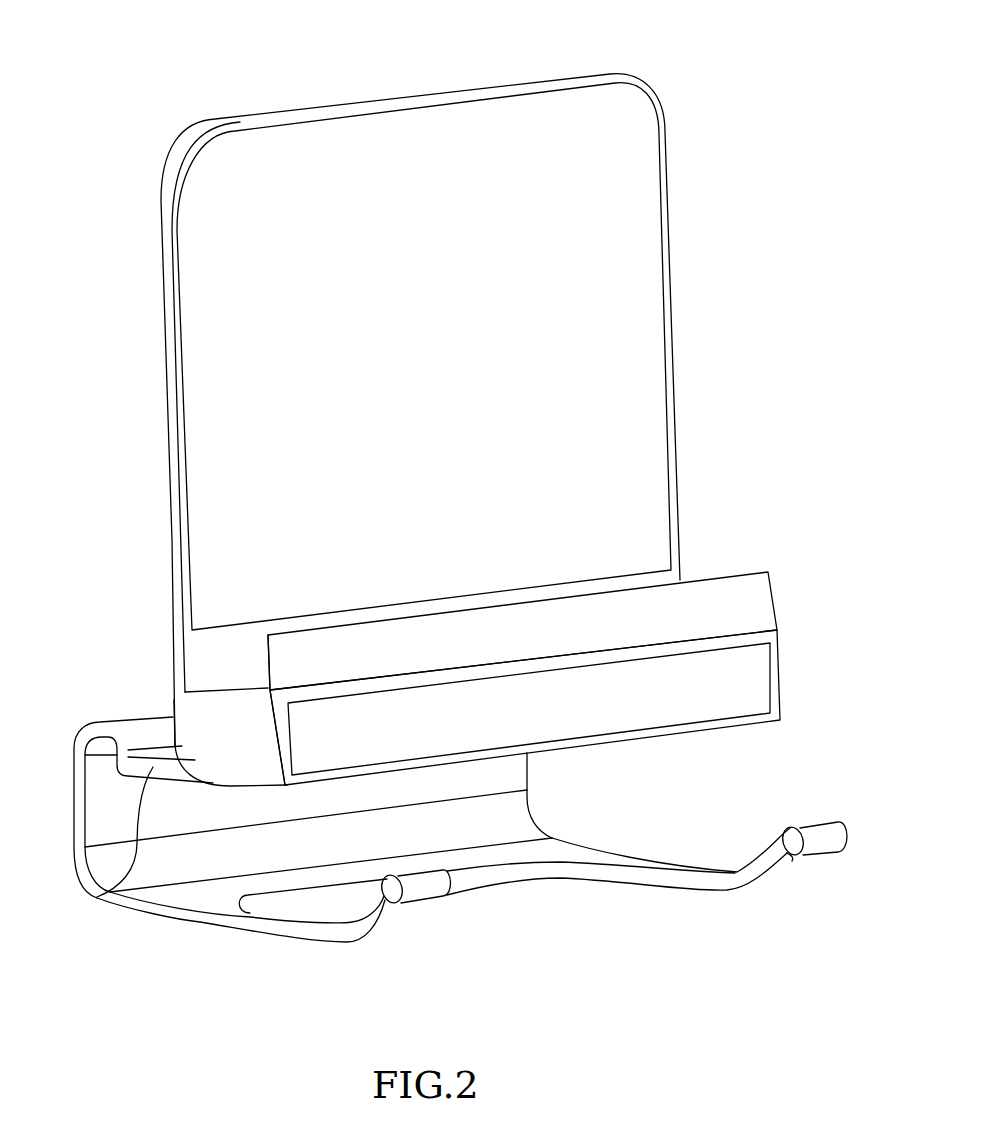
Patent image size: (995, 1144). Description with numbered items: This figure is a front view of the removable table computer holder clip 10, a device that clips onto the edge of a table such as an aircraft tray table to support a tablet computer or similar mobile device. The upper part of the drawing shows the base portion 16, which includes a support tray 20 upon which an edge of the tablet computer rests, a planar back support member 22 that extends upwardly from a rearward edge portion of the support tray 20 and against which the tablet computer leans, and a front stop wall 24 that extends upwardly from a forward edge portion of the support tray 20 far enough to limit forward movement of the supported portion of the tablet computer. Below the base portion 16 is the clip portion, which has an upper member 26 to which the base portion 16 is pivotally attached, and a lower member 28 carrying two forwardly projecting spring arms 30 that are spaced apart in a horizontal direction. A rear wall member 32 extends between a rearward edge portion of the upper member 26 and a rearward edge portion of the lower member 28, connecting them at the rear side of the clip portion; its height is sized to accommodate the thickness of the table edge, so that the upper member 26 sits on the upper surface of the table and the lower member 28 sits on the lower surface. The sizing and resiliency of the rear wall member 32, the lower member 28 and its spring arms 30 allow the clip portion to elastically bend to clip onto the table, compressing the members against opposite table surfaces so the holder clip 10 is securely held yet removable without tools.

The removable table computer holder clip 10 is at (198, 58).
The base portion 16 is at (778, 675).
The support tray 20 is at (207, 718).
The planar back support member 22 is at (653, 288).
The front stop wall 24 is at (767, 608).
The upper member 26 is at (103, 892).
The lower member 28 is at (533, 812).
The spring arms 30 is at (392, 920).
The rear wall member 32 is at (77, 808).